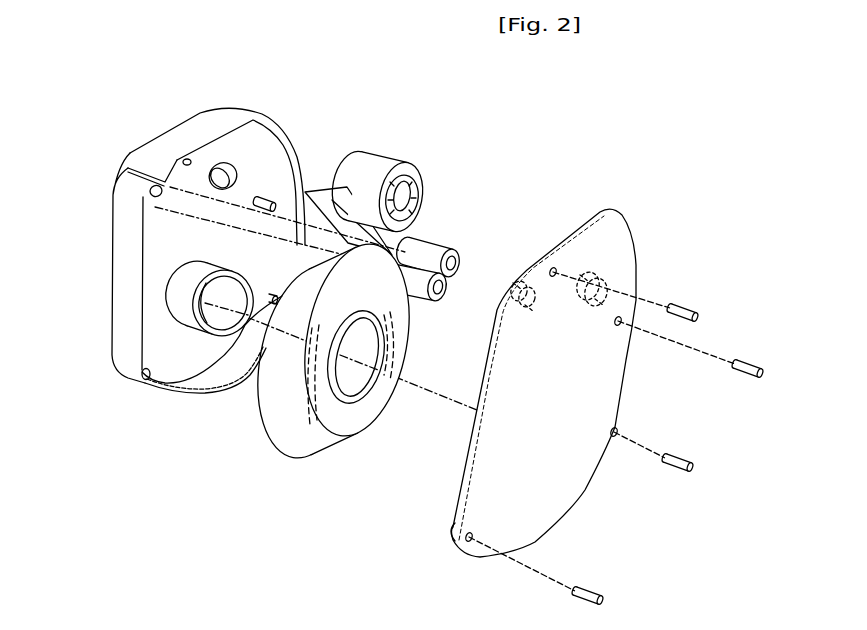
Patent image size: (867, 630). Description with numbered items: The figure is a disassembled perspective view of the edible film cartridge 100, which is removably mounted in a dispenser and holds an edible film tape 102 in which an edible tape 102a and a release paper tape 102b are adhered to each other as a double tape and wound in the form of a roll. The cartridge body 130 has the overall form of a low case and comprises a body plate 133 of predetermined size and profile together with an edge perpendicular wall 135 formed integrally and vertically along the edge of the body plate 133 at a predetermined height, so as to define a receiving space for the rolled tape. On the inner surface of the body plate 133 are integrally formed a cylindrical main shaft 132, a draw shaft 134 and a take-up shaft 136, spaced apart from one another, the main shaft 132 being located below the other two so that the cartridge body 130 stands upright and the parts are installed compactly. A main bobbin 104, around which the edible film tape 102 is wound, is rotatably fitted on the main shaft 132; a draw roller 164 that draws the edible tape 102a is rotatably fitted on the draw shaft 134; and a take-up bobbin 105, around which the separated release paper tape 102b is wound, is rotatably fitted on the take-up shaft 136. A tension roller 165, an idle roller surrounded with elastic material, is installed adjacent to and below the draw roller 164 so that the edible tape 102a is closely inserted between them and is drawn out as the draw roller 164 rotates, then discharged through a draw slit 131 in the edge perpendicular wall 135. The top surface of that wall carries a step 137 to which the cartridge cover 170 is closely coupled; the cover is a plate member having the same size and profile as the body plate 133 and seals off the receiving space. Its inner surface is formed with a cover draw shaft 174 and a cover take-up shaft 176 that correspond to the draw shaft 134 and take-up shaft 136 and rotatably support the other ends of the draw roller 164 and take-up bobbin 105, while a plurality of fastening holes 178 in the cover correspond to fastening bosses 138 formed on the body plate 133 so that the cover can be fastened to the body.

The edible film cartridge 100 is at (474, 119).
The edible film tape 102 is at (423, 93).
The edible tape 102a is at (330, 198).
The release paper tape 102b is at (382, 163).
The main bobbin 104 is at (352, 405).
The take-up bobbin 105 is at (412, 176).
The cartridge body 130 is at (275, 107).
The draw slit 131 is at (112, 200).
The main shaft 132 is at (185, 298).
The body plate 133 is at (213, 250).
The draw shaft 134 is at (165, 181).
The edge perpendicular wall 135 is at (190, 128).
The take-up shaft 136 is at (228, 165).
The step 137 is at (198, 400).
The fastening bosses 138 is at (275, 198).
The draw roller 164 is at (431, 248).
The tension roller 165 is at (431, 299).
The cartridge cover 170 is at (615, 206).
The cover draw shaft 174 is at (522, 288).
The cover take-up shaft 176 is at (598, 281).
The fastening holes 178 is at (714, 421).